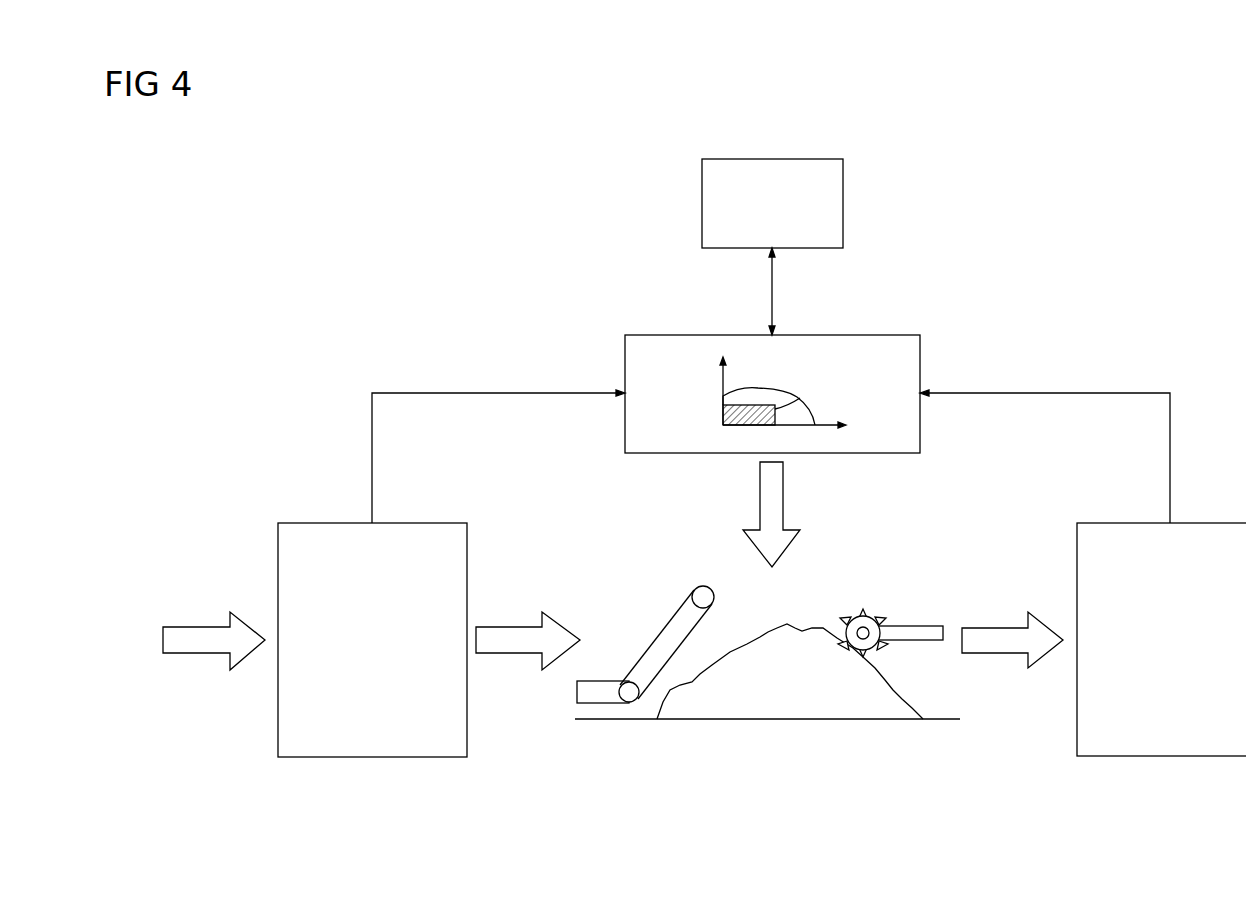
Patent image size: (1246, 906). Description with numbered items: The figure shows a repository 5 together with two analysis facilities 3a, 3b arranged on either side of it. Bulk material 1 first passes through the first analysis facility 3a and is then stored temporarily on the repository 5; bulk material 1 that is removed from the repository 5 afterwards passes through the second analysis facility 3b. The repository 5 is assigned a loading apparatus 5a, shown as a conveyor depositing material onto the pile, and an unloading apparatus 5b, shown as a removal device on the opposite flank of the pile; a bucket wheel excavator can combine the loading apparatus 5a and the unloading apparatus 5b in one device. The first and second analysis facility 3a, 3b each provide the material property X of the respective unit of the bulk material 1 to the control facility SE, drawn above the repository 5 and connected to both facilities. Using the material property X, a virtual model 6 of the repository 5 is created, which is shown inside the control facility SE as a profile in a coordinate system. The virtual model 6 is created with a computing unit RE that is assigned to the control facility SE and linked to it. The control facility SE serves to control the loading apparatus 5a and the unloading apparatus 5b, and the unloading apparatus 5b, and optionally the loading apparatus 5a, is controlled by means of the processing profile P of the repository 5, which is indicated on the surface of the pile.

The computing unit RE is at (772, 159).
The control facility SE is at (645, 335).
The virtual model 6 is at (700, 401).
The material property X is at (771, 445).
The first analysis facility 3a is at (323, 523).
The second analysis facility 3b is at (1223, 523).
The bulk material 1 is at (188, 625).
The repository 5 is at (806, 590).
The loading apparatus 5a is at (665, 647).
The unloading apparatus 5b is at (913, 624).
The processing profile P is at (771, 647).